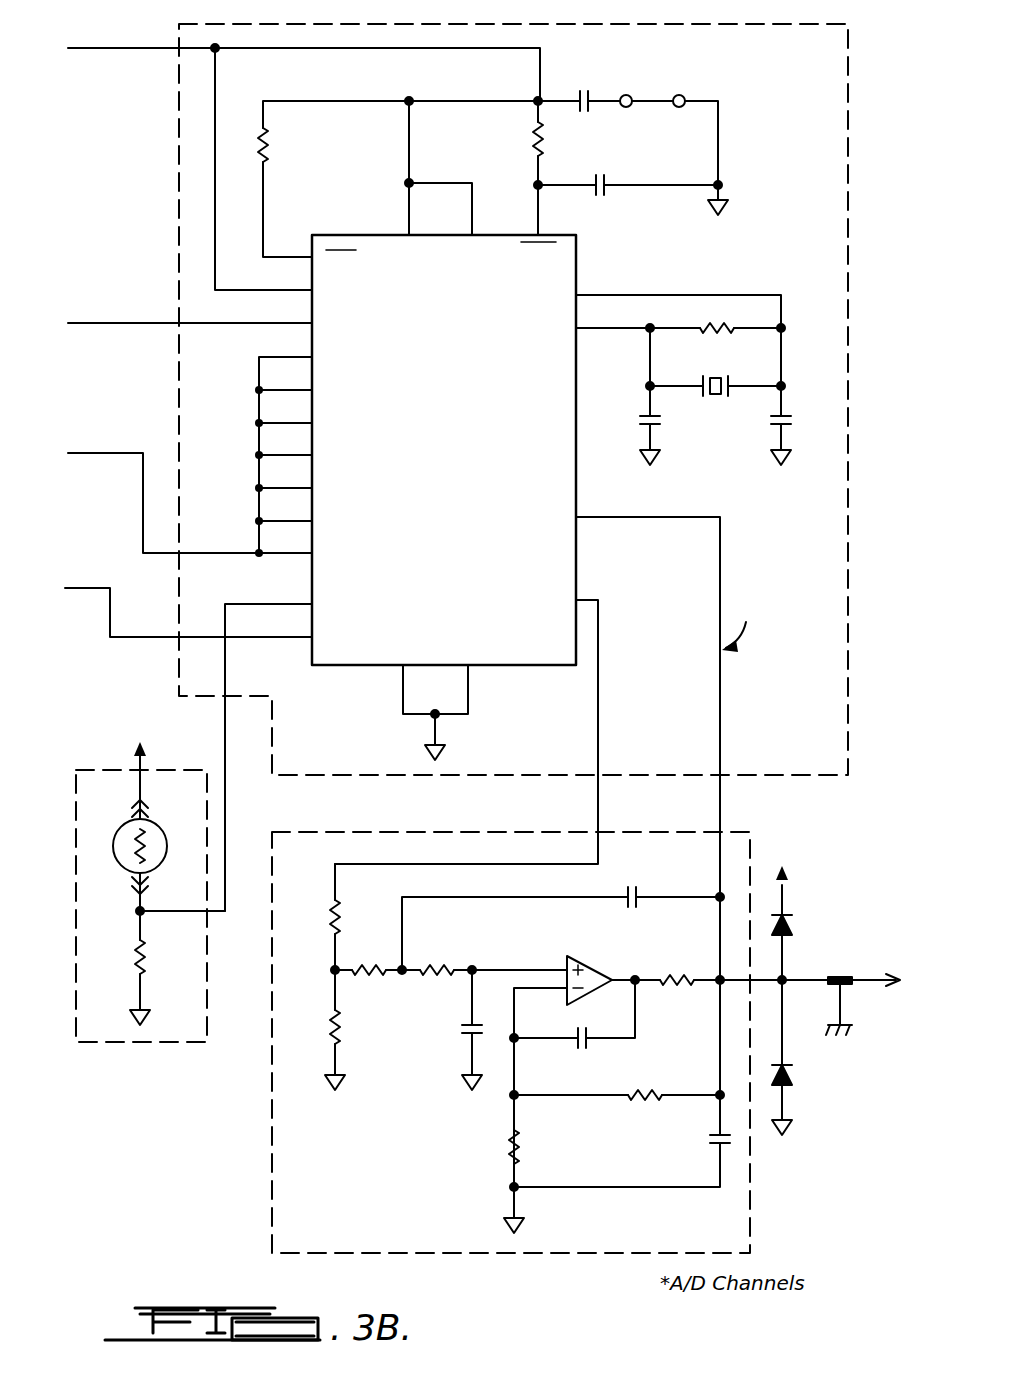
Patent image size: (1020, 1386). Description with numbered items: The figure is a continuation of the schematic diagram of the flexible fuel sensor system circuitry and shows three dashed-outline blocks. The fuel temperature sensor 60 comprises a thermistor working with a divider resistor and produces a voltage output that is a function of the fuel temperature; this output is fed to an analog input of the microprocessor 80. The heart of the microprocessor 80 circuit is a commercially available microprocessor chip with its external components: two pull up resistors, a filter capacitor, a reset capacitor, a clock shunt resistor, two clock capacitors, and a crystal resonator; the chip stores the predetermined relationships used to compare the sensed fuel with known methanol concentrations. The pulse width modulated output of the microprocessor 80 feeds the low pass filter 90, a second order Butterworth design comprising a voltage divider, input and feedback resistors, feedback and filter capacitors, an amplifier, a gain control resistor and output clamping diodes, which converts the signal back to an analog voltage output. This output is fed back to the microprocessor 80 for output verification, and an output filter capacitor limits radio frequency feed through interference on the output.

The microprocessor 80 is at (852, 292).
The fuel temperature sensor 60 is at (135, 1050).
The low pass filter 90 is at (758, 1201).